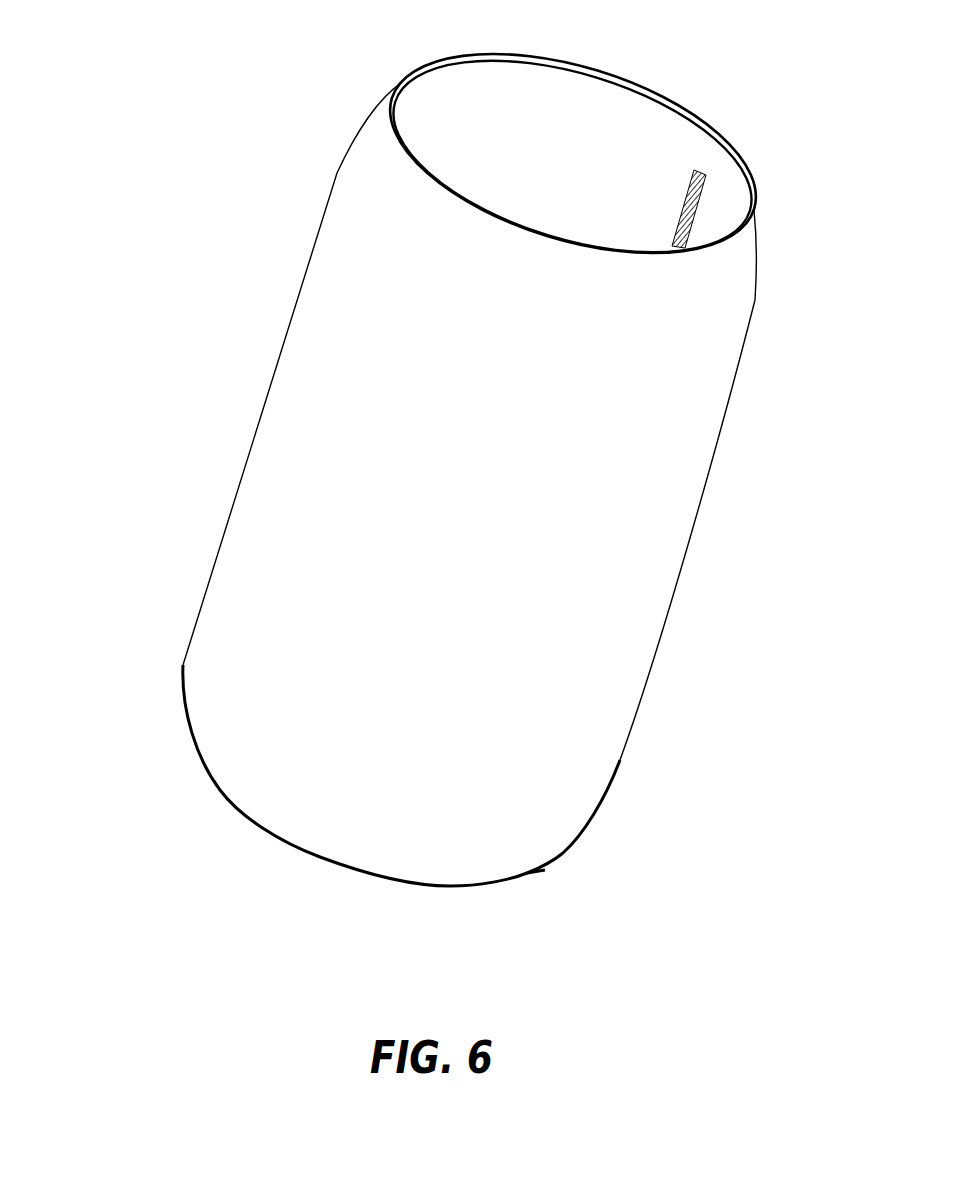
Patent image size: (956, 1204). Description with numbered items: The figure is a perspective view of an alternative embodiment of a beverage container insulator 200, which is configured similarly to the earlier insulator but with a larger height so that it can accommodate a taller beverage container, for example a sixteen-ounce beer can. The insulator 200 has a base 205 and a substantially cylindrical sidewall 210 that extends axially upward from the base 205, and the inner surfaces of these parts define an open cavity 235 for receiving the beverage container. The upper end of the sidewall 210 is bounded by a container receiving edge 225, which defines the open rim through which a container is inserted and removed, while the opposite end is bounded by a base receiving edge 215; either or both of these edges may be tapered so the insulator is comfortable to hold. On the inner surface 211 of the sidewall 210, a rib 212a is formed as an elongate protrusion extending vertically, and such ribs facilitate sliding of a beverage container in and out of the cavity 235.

The beverage container insulator 200 is at (435, 461).
The base 205 is at (237, 810).
The sidewall 210 is at (318, 520).
The inner surface of the sidewall 211 is at (513, 127).
The rib 212a is at (700, 165).
The base receiving edge 215 is at (552, 873).
The container receiving edge 225 is at (398, 81).
The cavity 235 is at (616, 156).